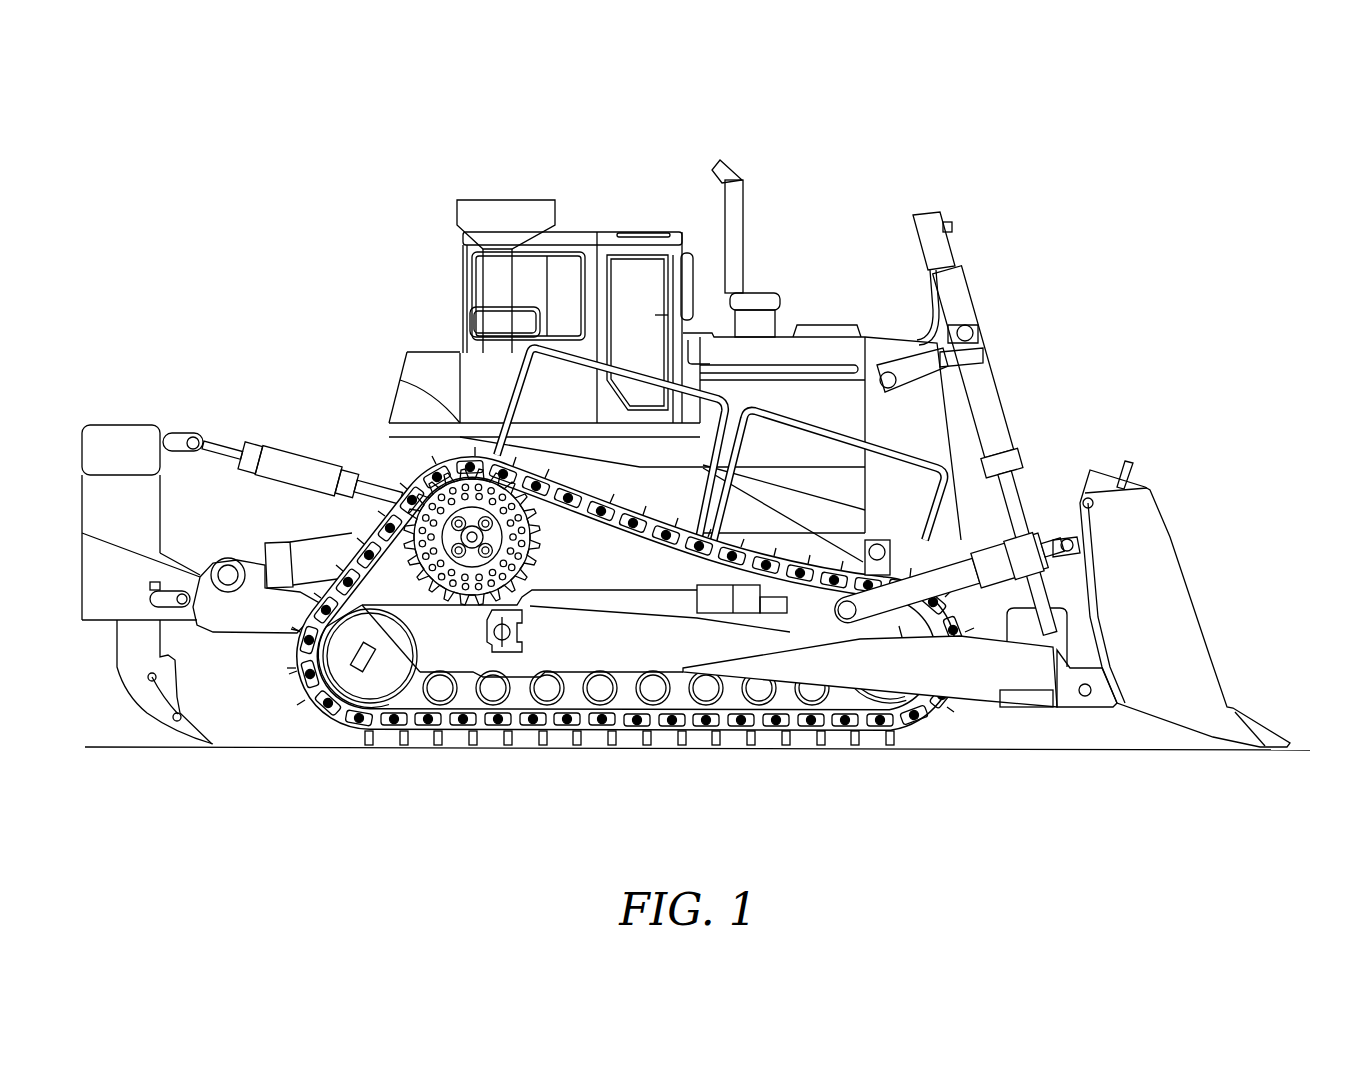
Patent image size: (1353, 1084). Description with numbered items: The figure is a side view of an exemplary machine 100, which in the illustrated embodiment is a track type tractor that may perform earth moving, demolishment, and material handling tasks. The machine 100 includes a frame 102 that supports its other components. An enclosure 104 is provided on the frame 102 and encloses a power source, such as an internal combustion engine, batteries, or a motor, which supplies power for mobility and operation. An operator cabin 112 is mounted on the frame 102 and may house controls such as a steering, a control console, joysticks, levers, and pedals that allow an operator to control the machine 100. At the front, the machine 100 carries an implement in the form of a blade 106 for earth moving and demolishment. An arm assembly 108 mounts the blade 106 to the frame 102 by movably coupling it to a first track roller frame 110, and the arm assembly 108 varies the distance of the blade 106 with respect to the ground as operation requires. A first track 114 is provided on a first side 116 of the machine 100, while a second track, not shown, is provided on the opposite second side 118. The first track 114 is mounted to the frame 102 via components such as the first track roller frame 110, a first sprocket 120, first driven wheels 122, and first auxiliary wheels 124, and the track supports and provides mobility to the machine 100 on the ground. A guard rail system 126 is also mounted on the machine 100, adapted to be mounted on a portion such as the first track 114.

The machine 100 is at (1120, 118).
The frame 102 is at (395, 462).
The enclosure 104 is at (810, 360).
The blade 106 is at (1121, 632).
The arm assembly 108 is at (1022, 720).
The first track roller frame 110 is at (436, 655).
The operator cabin 112 is at (585, 237).
The first track 114 is at (298, 706).
The first side 116 is at (1140, 776).
The second side 118 is at (1126, 386).
The first sprocket 120 is at (462, 458).
The first driven wheels 122 is at (365, 690).
The first auxiliary wheels 124 is at (546, 693).
The guard rail system 126 is at (899, 445).